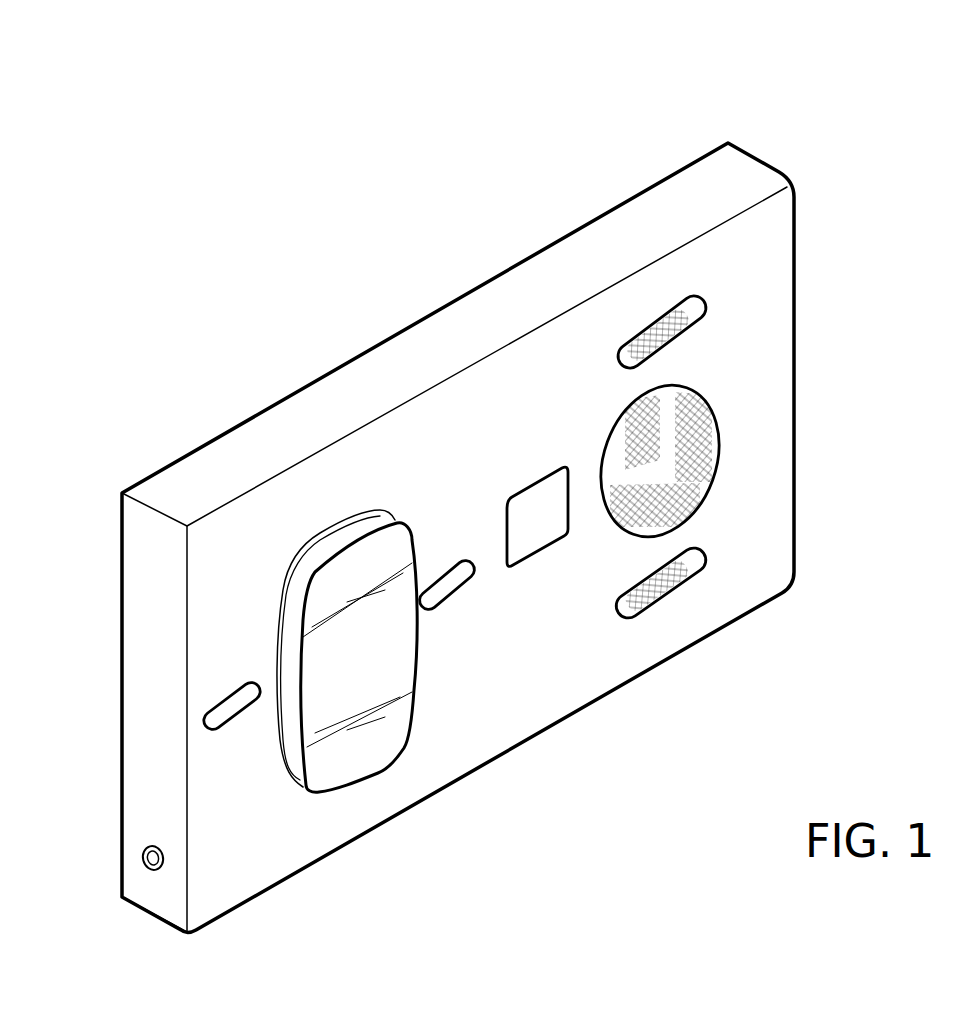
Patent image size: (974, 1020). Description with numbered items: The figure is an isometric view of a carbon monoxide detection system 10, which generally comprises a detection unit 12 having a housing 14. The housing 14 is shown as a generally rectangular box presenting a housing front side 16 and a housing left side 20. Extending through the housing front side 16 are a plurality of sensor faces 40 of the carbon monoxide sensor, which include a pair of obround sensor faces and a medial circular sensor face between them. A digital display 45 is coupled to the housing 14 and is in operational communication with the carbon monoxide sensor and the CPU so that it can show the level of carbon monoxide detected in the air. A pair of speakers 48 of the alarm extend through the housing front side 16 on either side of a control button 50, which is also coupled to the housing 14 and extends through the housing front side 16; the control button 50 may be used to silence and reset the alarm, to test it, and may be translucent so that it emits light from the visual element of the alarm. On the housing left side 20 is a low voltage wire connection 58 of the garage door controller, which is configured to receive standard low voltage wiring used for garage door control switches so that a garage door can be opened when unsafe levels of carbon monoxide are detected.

The carbon monoxide detection system 10 is at (692, 124).
The detection unit 12 is at (488, 538).
The housing 14 is at (794, 402).
The housing front side 16 is at (578, 675).
The housing left side 20 is at (137, 792).
The sensor faces 40 is at (680, 323).
The digital display 45 is at (512, 503).
The speakers 48 is at (447, 590).
The control button 50 is at (372, 750).
The low voltage wire connection 58 is at (143, 856).